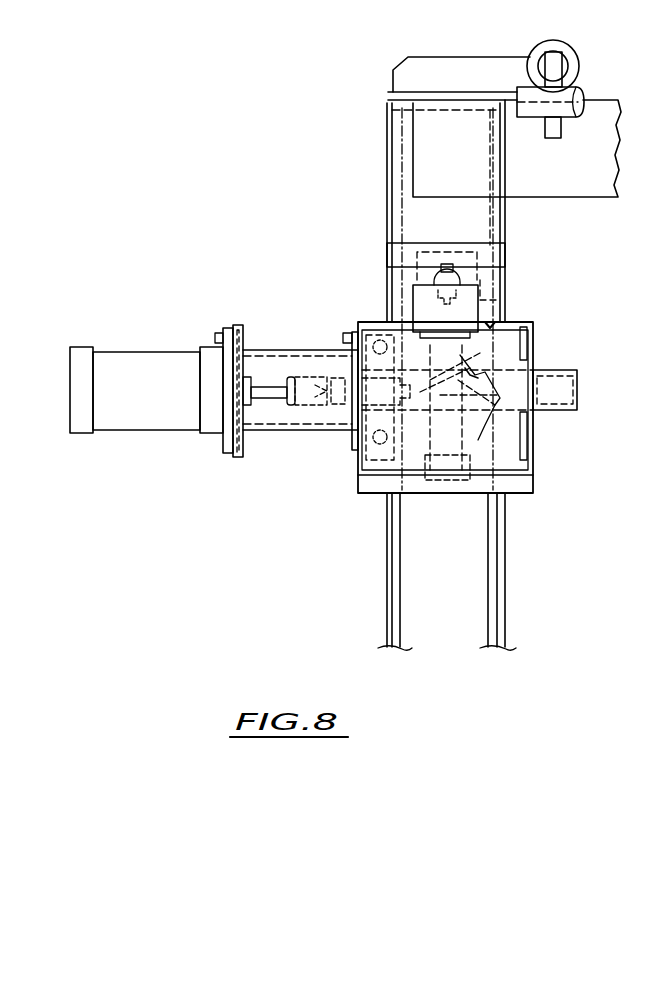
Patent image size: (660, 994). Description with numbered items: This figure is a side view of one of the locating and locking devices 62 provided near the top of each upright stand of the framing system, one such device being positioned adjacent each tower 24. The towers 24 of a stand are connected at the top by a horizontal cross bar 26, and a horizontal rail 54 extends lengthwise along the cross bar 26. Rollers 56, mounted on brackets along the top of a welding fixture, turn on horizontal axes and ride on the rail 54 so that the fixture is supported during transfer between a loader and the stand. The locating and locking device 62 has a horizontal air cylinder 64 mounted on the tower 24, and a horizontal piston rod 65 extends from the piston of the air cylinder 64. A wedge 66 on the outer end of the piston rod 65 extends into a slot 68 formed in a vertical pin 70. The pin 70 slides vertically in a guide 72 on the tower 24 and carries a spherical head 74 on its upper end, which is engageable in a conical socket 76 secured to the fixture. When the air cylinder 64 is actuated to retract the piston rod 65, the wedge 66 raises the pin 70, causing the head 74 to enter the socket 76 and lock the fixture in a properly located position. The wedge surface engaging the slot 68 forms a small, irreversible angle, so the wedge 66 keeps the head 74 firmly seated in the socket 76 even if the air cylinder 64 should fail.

The tower 24 is at (404, 538).
The horizontal cross bar 26 is at (585, 192).
The horizontal rail 54 is at (585, 85).
The roller 56 is at (559, 46).
The locating and locking device 62 is at (337, 448).
The horizontal air cylinder 64 is at (158, 362).
The horizontal piston rod 65 is at (270, 385).
The wedge 66 is at (545, 332).
The slot 68 is at (500, 430).
The vertical pin 70 is at (432, 305).
The guide 72 is at (490, 323).
The spherical head 74 is at (440, 272).
The conical socket 76 is at (471, 275).